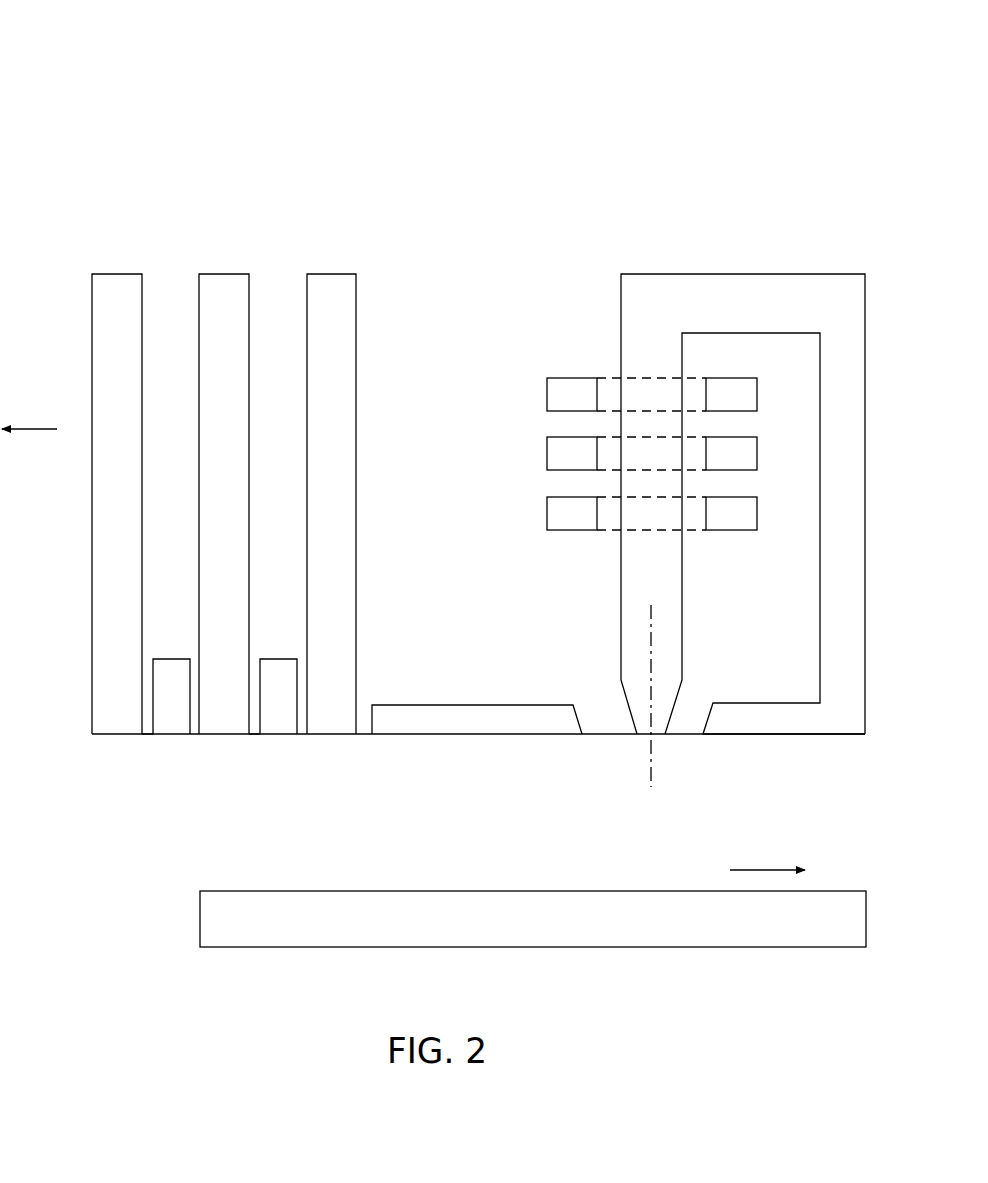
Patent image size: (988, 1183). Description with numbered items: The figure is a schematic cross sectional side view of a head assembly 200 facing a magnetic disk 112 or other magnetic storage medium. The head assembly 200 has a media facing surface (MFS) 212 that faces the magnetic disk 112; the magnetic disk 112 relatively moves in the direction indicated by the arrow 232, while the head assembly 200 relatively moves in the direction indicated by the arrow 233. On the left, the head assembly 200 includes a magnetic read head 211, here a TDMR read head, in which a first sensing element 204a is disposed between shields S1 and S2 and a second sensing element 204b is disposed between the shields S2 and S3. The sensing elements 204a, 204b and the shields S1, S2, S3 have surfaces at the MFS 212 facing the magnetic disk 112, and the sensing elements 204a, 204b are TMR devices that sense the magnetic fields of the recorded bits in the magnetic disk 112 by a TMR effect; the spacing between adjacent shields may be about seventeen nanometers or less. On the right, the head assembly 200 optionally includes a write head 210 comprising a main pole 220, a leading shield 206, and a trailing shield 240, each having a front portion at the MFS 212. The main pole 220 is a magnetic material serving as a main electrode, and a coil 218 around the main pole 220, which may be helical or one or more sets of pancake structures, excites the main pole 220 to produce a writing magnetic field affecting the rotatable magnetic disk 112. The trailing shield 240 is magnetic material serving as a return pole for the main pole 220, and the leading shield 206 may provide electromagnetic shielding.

The head assembly 200 is at (138, 76).
The magnetic read head 211 is at (216, 263).
The shield S1 is at (113, 720).
The shield S2 is at (224, 720).
The shield S3 is at (331, 720).
The first sensing element 204a is at (173, 728).
The second sensing element 204b is at (280, 728).
The media facing surface 212 is at (162, 735).
The leading shield 206 is at (427, 734).
The write head 210 is at (871, 222).
The trailing shield 240 is at (838, 722).
The main pole 220 is at (665, 570).
The coil 218 is at (564, 530).
The arrow 233 is at (36, 429).
The arrow 232 is at (758, 870).
The magnetic disk 112 is at (795, 947).